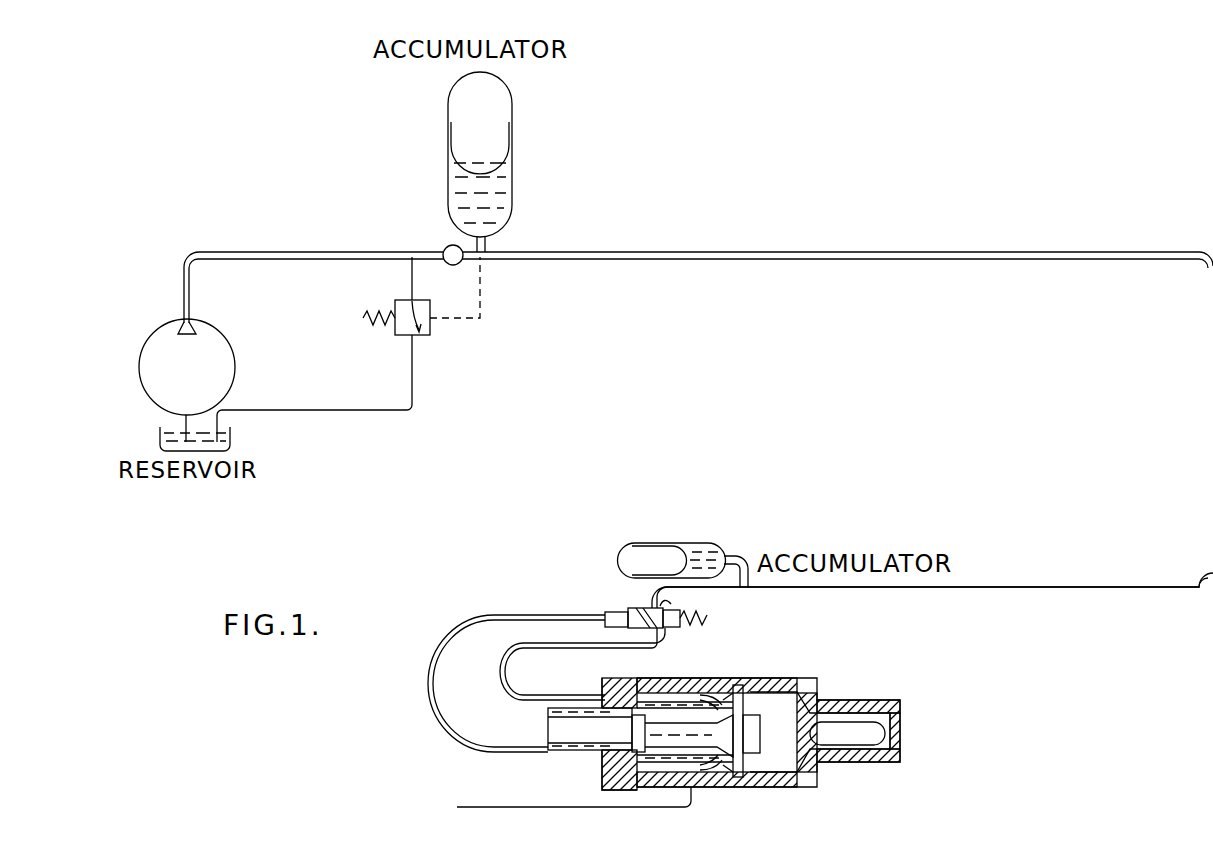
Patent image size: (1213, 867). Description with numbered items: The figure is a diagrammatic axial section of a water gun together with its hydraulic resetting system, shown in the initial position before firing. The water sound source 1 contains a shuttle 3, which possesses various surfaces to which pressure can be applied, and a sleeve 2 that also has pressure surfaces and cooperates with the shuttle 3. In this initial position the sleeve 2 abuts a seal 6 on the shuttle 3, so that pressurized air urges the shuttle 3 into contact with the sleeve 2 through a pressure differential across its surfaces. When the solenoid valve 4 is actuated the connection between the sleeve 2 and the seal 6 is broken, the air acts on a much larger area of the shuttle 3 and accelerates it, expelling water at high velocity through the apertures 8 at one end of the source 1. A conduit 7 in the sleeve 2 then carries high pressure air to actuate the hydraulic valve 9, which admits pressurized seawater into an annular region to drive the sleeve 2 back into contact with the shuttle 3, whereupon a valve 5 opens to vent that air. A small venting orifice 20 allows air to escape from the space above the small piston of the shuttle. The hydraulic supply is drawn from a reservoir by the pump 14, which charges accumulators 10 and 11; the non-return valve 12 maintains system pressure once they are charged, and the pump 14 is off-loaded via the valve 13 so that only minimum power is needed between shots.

The water sound source 1 is at (770, 682).
The sleeve 2 is at (648, 688).
The shuttle 3 is at (738, 697).
The solenoid valve 4 is at (600, 733).
The valve 5 is at (716, 693).
The seal 6 is at (727, 722).
The conduit 7 is at (712, 787).
The apertures 8 is at (860, 745).
The hydraulic valve 9 is at (626, 615).
The accumulator 10 is at (693, 545).
The accumulator 11 is at (504, 177).
The non-return valve 12 is at (445, 248).
The valve 13 is at (430, 337).
The pump 14 is at (166, 331).
The venting orifice 20 is at (609, 688).